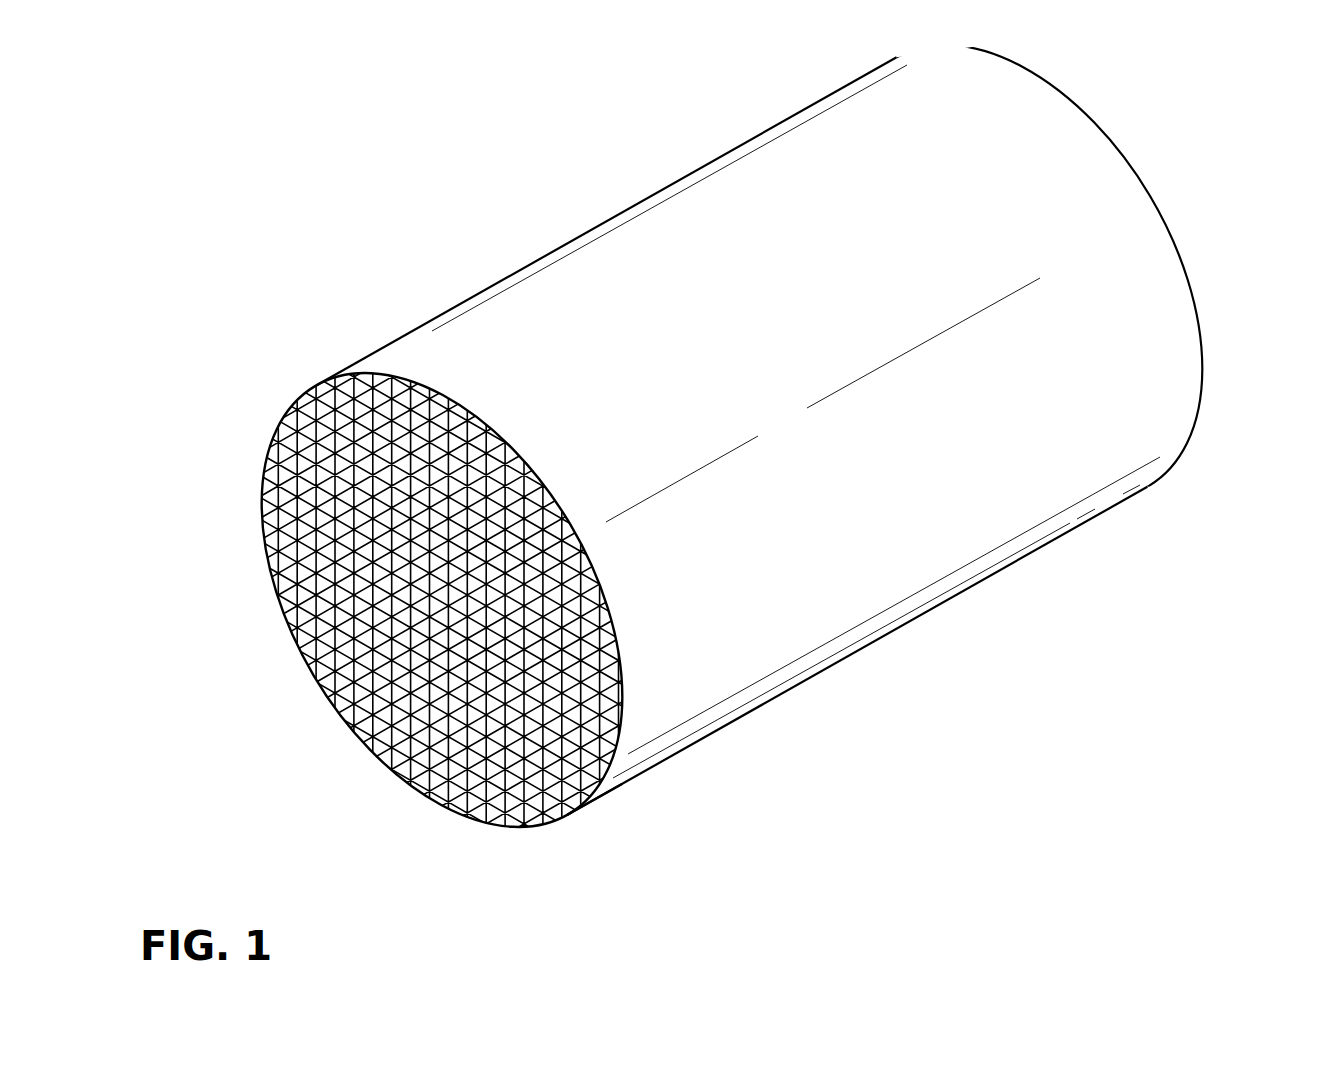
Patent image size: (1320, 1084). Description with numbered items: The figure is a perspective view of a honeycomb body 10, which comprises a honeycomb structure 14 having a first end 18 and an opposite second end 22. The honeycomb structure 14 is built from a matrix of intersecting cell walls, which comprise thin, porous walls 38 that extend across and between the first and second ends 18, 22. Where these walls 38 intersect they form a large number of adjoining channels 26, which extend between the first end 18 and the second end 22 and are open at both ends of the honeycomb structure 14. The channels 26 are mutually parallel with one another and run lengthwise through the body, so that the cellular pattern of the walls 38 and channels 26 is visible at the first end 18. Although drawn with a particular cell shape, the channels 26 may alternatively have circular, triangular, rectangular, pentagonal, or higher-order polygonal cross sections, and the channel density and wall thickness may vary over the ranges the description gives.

The honeycomb body 10 is at (349, 260).
The honeycomb structure 14 is at (547, 295).
The first end 18 is at (461, 842).
The second end 22 is at (1177, 228).
The channels 26 is at (386, 743).
The walls 38 is at (601, 788).